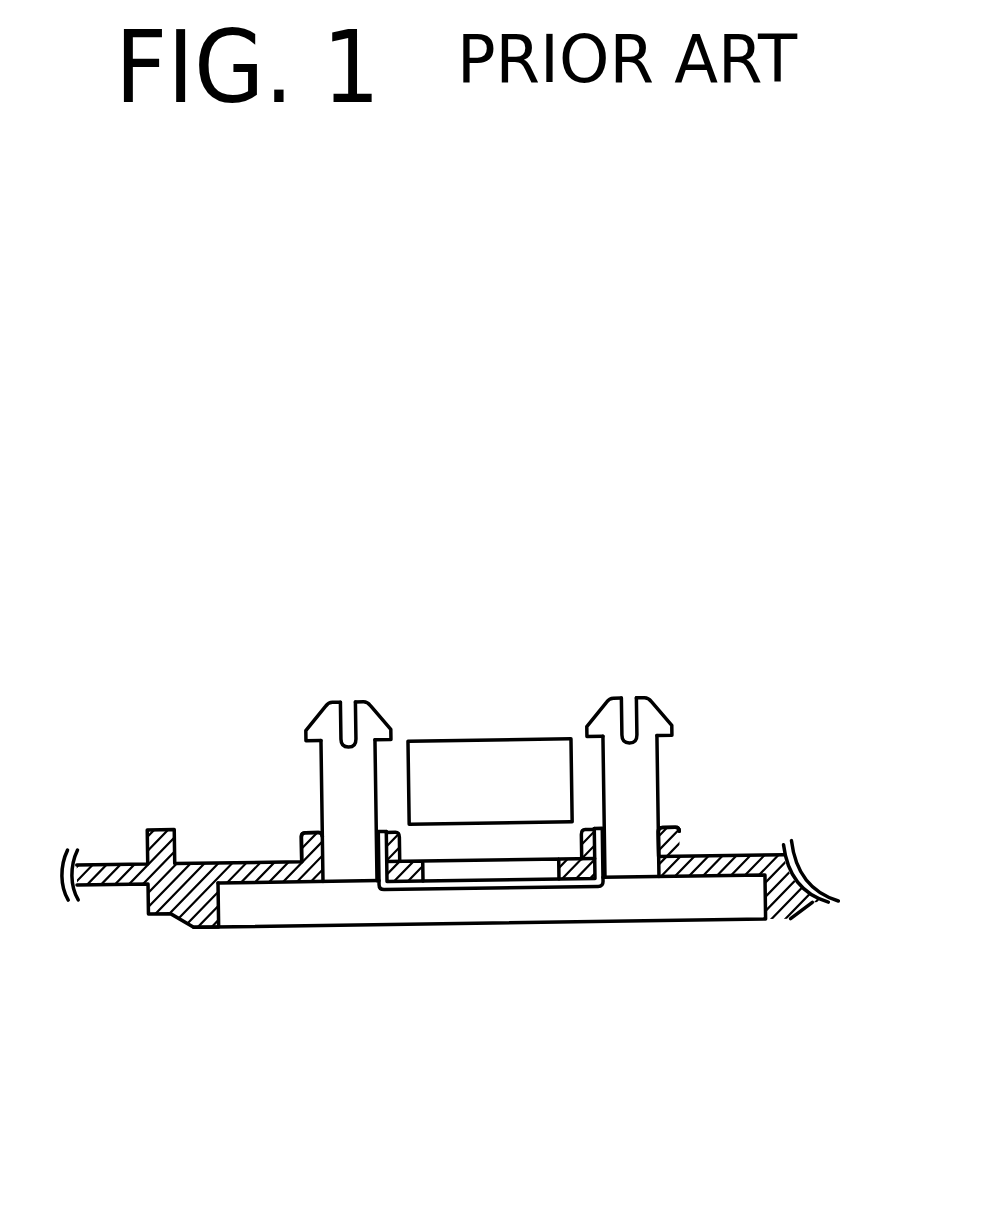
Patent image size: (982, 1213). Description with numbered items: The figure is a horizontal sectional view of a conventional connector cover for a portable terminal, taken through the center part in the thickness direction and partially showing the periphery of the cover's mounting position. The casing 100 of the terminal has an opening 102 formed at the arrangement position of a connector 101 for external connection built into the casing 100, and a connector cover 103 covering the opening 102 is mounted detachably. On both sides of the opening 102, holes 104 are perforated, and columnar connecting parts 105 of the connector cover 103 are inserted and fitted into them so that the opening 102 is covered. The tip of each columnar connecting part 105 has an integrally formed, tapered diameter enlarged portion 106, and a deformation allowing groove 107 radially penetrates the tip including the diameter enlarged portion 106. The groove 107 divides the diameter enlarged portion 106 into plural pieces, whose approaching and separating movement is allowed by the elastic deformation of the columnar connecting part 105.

The casing 100 is at (103, 880).
The connector 101 is at (492, 740).
The opening 102 is at (492, 870).
The connector cover 103 is at (395, 904).
The hole 104 is at (322, 848).
The columnar connecting part 105 is at (324, 785).
The diameter enlarged portion 106 is at (392, 666).
The deformation allowing groove 107 is at (355, 763).